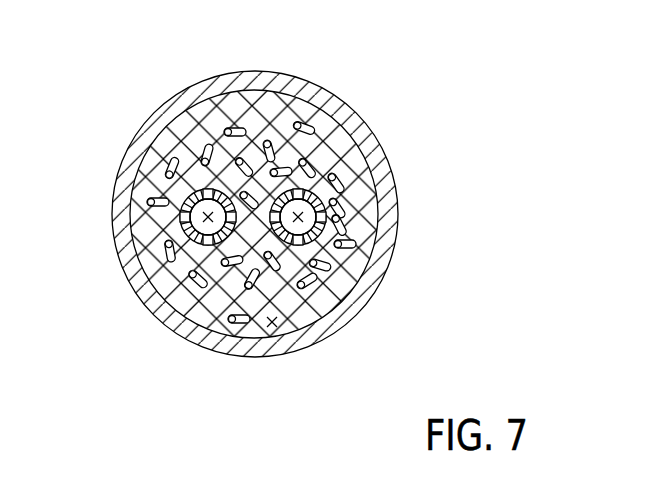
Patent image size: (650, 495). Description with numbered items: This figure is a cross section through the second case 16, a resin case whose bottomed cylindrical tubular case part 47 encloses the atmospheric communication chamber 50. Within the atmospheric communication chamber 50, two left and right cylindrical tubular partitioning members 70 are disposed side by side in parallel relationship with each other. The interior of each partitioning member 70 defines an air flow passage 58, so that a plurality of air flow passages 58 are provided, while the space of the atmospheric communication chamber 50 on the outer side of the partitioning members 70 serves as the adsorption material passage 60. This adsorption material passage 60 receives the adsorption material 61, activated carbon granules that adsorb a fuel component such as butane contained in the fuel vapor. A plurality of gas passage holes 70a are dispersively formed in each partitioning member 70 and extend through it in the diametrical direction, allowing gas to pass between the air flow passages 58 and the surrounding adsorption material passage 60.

The second case 16 is at (165, 82).
The case part 47 is at (250, 70).
The atmospheric communication chamber 50 is at (323, 298).
The air flow passage 58 is at (360, 248).
The adsorption material passage 60 is at (270, 330).
The adsorption material 61 is at (308, 102).
The partitioning member 70 is at (178, 228).
The gas passage hole 70a is at (188, 157).